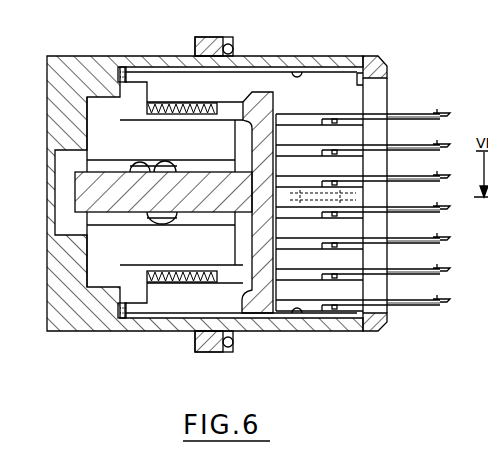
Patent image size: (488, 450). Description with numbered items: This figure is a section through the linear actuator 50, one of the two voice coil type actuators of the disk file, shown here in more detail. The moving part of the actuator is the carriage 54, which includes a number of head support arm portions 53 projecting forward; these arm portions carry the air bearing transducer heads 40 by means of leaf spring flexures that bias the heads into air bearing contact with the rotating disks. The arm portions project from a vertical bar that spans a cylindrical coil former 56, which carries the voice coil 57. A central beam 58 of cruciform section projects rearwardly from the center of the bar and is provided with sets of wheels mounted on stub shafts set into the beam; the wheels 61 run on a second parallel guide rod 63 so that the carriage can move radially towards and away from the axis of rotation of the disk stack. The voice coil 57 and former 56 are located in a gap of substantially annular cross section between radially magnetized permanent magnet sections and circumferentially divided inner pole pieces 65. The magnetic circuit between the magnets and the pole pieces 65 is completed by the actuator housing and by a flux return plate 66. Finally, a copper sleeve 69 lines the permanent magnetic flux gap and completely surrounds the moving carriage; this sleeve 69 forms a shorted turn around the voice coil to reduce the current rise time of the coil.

The air bearing transducer heads 40 is at (460, 99).
The linear actuator 50 is at (110, 333).
The head support arm portions 53 is at (278, 117).
The actuator carriage 54 is at (262, 91).
The cylindrical coil former 56 is at (191, 88).
The voice coil 57 is at (174, 91).
The central beam 58 is at (148, 144).
The wheels 61 is at (155, 226).
The second guide rod 63 is at (357, 195).
The inner pole pieces 65 is at (108, 117).
The flux return plate 66 is at (388, 104).
The copper sleeve 69 is at (307, 60).